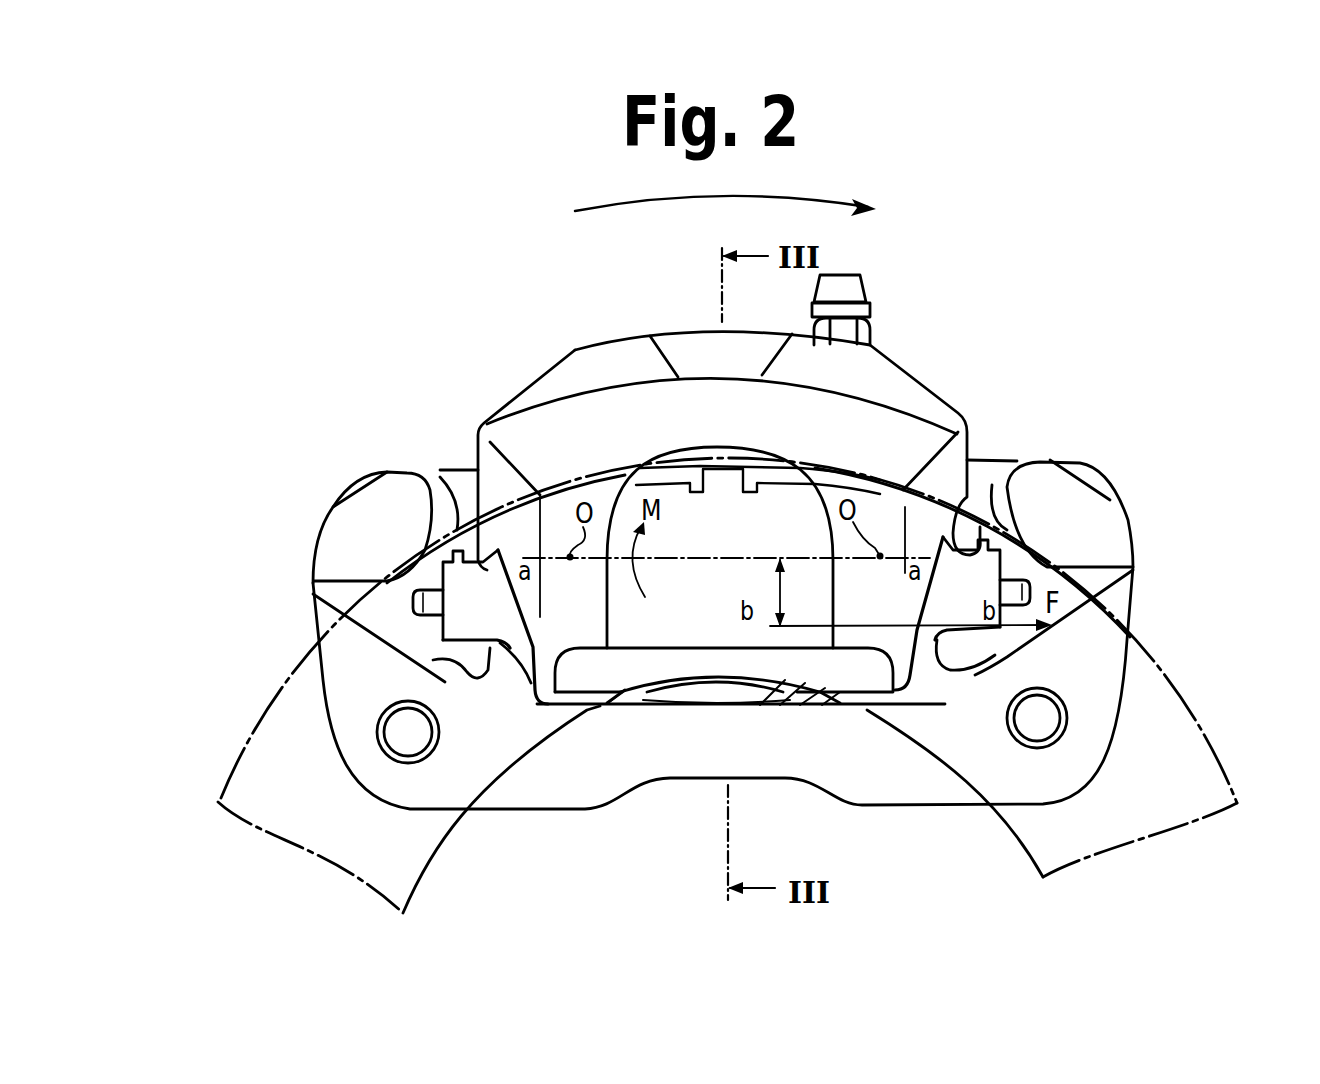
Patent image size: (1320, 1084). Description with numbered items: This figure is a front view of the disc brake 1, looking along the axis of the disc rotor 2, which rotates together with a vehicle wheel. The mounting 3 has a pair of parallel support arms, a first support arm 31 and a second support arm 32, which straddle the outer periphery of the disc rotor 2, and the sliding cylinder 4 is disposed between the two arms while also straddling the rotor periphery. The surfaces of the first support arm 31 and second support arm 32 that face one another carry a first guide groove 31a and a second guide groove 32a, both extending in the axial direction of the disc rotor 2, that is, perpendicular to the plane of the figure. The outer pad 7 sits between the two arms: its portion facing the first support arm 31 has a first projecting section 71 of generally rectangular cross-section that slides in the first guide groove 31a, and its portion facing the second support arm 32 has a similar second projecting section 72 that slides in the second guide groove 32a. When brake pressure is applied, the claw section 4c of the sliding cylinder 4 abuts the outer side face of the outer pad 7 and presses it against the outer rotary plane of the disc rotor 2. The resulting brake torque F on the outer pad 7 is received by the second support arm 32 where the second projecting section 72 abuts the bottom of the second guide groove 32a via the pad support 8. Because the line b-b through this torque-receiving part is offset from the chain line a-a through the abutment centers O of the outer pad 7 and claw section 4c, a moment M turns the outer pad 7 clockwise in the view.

The disc brake 1 is at (974, 328).
The disc rotor 2 is at (1120, 800).
The mounting 3 is at (613, 767).
The first support arm 31 is at (383, 625).
The first guide groove 31a is at (433, 660).
The second support arm 32 is at (1097, 577).
The second guide groove 32a is at (980, 640).
The sliding cylinder 4 is at (575, 350).
The claw section 4c is at (820, 430).
The outer pad 7 is at (837, 670).
The first projecting section 71 is at (483, 583).
The second projecting section 72 is at (972, 527).
The pad support 8 is at (477, 650).